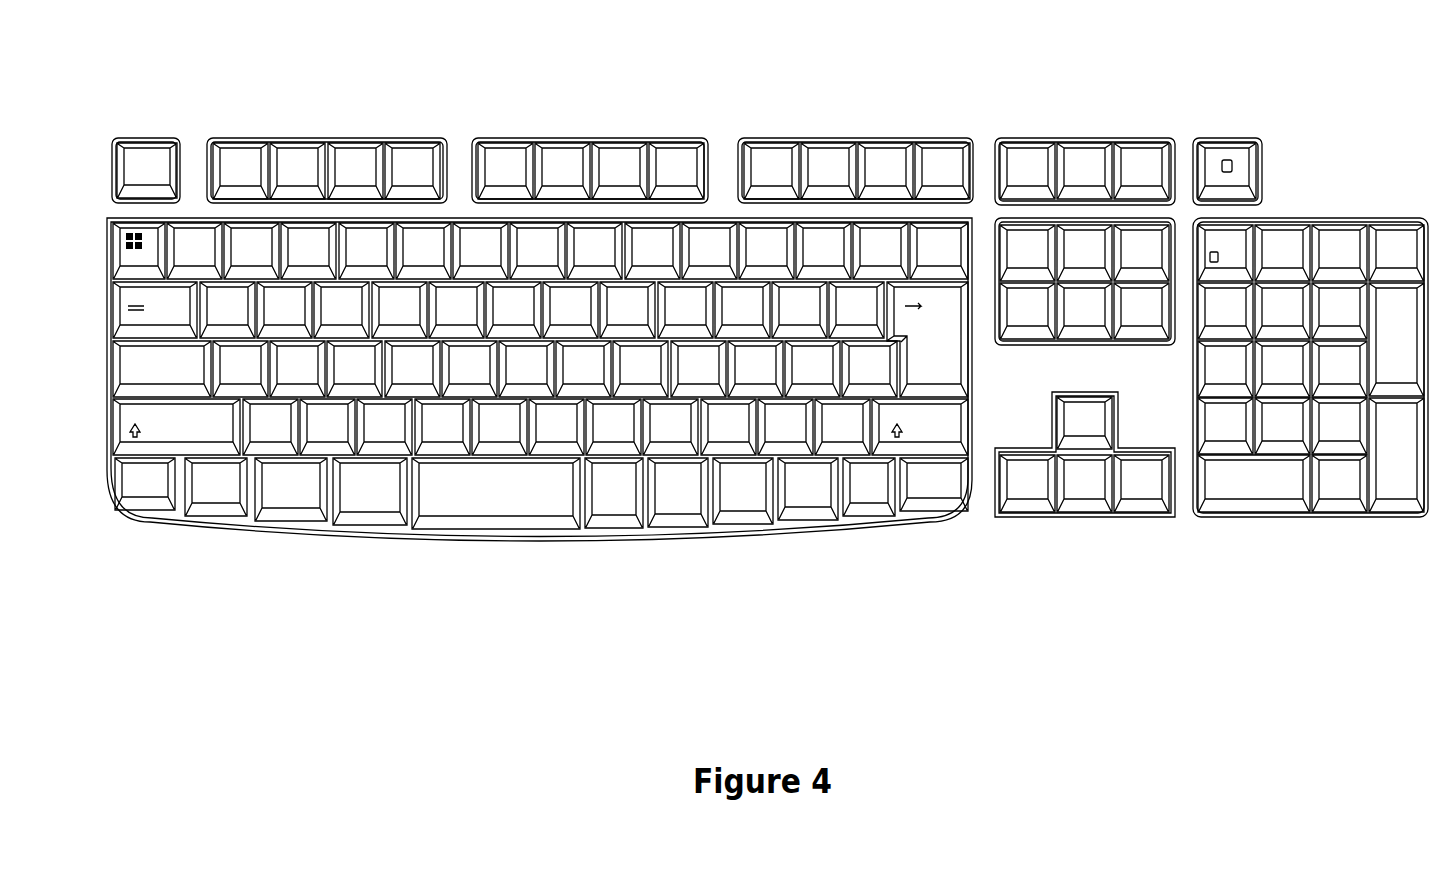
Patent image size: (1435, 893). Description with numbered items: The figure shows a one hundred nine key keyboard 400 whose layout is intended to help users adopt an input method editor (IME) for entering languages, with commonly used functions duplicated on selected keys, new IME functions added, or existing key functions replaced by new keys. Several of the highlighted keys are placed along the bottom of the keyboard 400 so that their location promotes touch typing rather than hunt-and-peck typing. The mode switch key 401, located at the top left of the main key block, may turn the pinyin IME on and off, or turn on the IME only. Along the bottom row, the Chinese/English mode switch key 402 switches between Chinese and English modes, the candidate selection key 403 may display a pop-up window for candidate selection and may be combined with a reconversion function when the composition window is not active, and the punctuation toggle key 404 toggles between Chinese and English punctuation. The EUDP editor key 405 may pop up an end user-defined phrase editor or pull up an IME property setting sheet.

The 109 key keyboard 400 is at (741, 64).
The mode switch key 401 is at (165, 228).
The Chinese/English mode switch key 402 is at (368, 512).
The candidate selection key 403 is at (615, 510).
The punctuation toggle key 404 is at (688, 512).
The EUDP editor key 405 is at (847, 435).